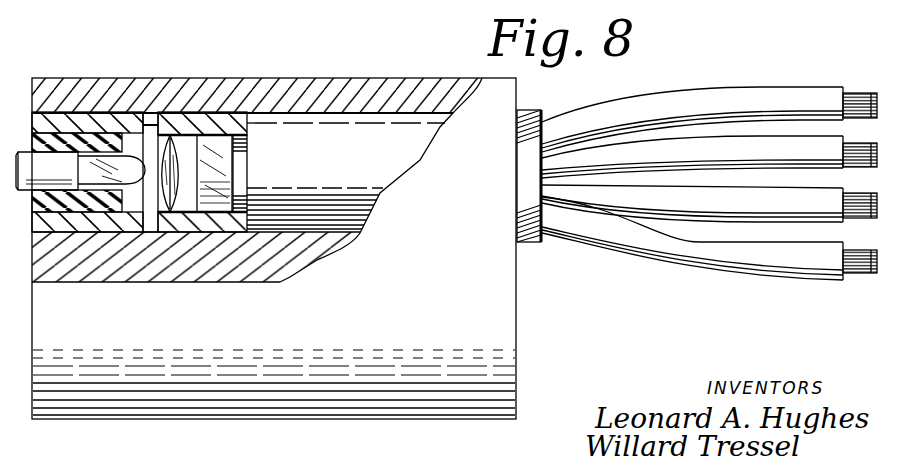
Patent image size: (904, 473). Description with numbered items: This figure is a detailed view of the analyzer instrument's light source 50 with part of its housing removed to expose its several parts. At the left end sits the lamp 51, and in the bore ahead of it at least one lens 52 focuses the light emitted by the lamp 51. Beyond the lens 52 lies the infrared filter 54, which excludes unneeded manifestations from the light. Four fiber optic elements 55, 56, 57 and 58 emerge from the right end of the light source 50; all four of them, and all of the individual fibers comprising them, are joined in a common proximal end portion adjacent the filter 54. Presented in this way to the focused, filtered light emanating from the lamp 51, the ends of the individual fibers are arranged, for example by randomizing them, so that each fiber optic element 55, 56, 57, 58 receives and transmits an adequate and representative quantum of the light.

The light source 50 is at (175, 365).
The lamp 51 is at (16, 152).
The lens 52 is at (192, 130).
The infrared filter 54 is at (222, 143).
The fiber optic element 55 is at (735, 98).
The fiber optic element 56 is at (793, 147).
The fiber optic element 57 is at (828, 215).
The fiber optic element 58 is at (745, 267).